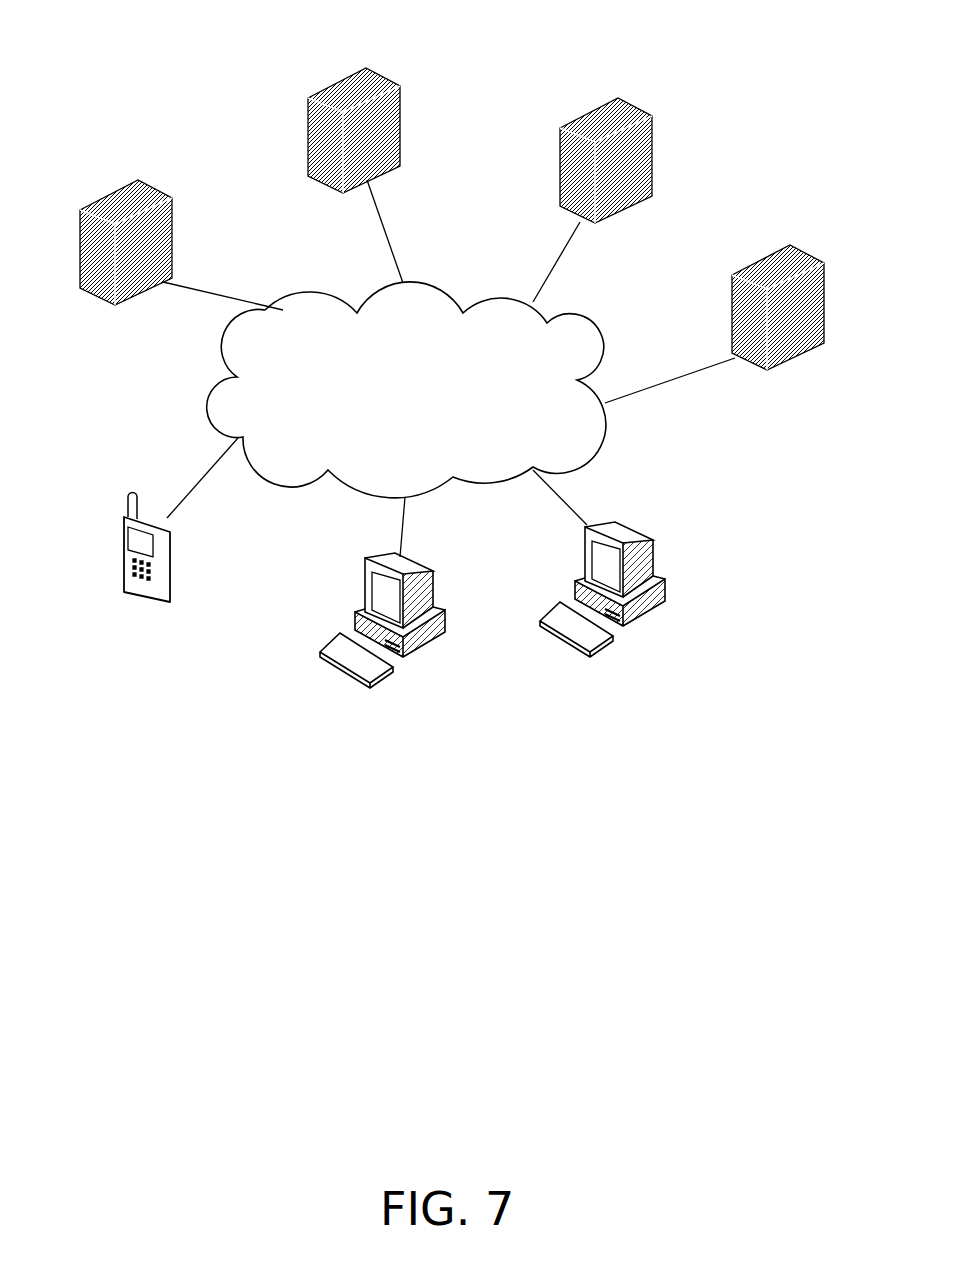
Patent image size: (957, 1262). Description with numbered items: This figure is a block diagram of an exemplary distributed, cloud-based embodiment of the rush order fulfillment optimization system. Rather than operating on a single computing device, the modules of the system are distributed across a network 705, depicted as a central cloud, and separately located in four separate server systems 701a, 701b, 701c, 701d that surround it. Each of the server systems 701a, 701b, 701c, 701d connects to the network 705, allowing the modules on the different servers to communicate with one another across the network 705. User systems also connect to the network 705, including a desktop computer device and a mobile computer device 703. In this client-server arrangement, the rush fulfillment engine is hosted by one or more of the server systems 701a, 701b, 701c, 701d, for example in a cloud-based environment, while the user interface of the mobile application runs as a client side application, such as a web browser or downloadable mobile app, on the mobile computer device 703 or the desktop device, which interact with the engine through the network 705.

The server system 701a is at (102, 198).
The server system 701b is at (332, 82).
The server system 701c is at (635, 108).
The server system 701d is at (810, 252).
The mobile computer device 703 is at (135, 602).
The network 705 is at (207, 392).